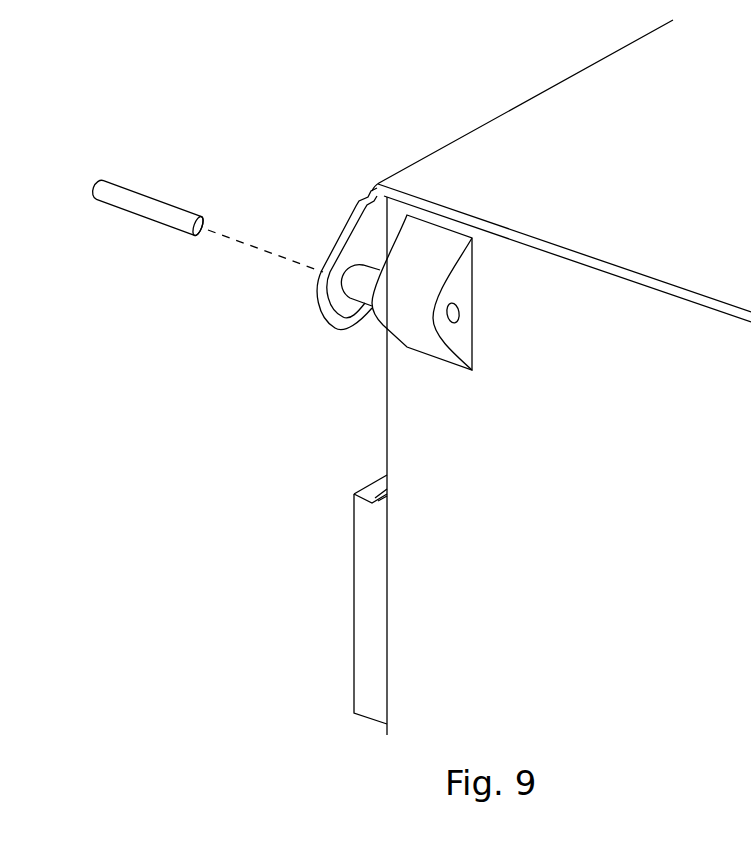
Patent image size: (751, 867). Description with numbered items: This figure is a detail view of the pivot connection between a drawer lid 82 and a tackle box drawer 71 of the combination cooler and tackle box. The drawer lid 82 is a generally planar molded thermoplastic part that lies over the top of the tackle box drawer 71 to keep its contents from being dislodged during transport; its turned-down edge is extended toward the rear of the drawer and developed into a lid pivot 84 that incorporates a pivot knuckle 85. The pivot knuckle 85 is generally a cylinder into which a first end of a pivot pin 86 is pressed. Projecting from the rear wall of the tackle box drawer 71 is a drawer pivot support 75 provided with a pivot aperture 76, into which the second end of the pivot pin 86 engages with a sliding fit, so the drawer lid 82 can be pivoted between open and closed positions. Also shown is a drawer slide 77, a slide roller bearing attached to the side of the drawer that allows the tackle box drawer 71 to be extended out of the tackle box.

The tackle box drawer 71 is at (398, 408).
The drawer pivot support 75 is at (400, 313).
The pivot aperture 76 is at (455, 315).
The drawer slide 77 is at (363, 545).
The drawer lid 82 is at (453, 157).
The lid pivot 84 is at (338, 298).
The pivot knuckle 85 is at (352, 273).
The pivot pin 86 is at (160, 207).